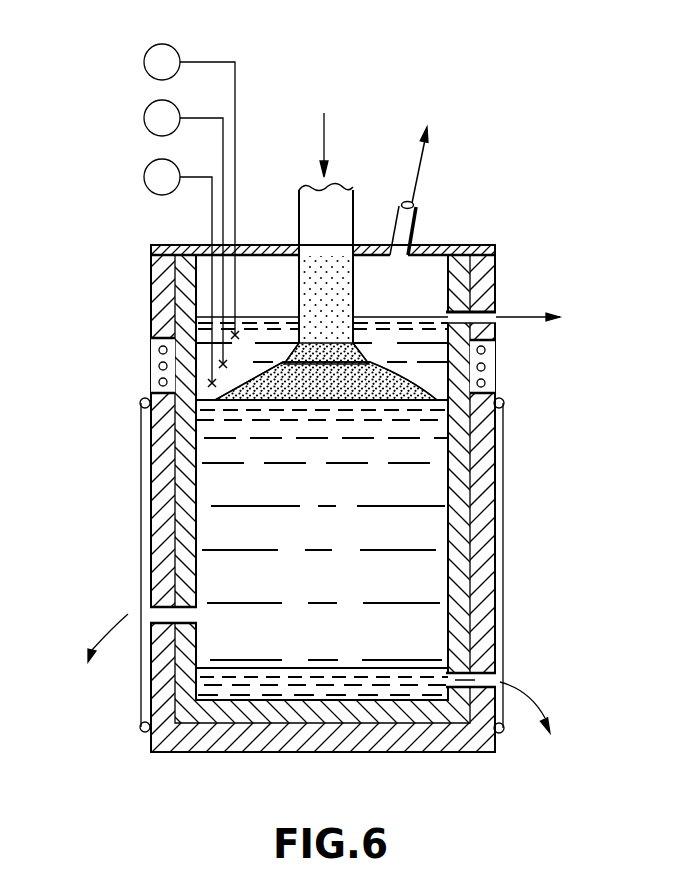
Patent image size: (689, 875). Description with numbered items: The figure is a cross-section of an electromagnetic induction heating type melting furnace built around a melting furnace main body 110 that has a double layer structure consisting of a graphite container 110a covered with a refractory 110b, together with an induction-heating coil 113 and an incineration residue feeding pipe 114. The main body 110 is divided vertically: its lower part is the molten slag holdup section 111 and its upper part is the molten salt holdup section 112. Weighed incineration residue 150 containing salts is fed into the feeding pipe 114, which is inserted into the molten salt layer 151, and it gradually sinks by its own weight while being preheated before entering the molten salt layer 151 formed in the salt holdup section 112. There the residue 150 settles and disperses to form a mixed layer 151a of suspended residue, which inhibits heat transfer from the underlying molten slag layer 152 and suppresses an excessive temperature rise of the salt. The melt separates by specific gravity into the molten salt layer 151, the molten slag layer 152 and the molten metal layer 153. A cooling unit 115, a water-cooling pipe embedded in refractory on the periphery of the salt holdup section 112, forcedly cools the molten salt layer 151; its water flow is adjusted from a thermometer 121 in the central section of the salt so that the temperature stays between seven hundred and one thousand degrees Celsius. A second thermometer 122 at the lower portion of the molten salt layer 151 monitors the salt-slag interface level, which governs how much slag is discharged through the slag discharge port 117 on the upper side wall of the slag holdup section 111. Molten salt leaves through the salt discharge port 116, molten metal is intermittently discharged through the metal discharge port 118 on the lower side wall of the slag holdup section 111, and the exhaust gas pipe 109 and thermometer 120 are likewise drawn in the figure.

The exhaust gas pipe 109 is at (417, 213).
The melting furnace main body 110 is at (123, 418).
The graphite container 110a is at (457, 528).
The refractory 110b is at (485, 580).
The molten slag holdup section 111 is at (160, 496).
The molten salt holdup section 112 is at (151, 298).
The induction-heating coil 113 is at (503, 463).
The incineration residue feeding pipe 114 is at (312, 204).
The cooling unit 115 is at (485, 367).
The salt discharge port 116 is at (483, 318).
The slag discharge port 117 is at (155, 613).
The metal discharge port 118 is at (496, 676).
The thermocouple T1 120 is at (150, 50).
The thermometer 121 is at (150, 105).
The thermometer 122 is at (150, 165).
The incineration residue 150 is at (340, 268).
The molten salt layer 151 is at (408, 340).
The mixed layer 151a is at (293, 383).
The molten slag layer 152 is at (342, 588).
The molten metal layer 153 is at (310, 690).